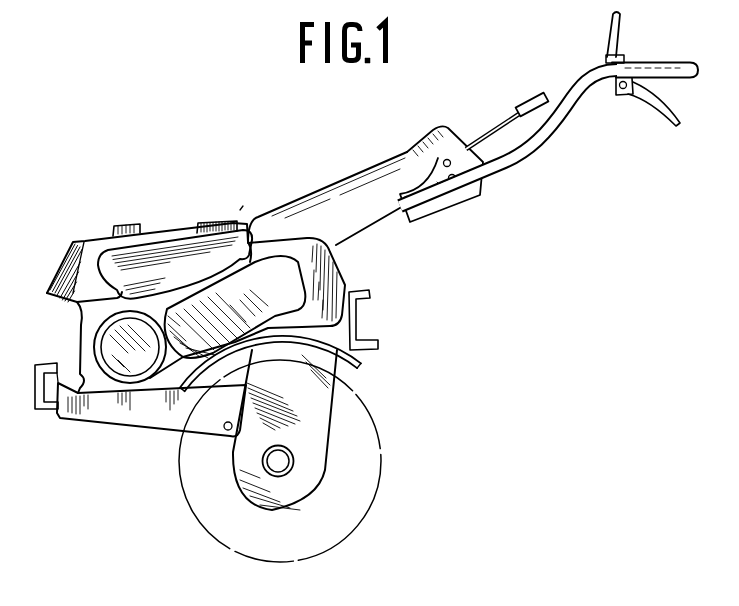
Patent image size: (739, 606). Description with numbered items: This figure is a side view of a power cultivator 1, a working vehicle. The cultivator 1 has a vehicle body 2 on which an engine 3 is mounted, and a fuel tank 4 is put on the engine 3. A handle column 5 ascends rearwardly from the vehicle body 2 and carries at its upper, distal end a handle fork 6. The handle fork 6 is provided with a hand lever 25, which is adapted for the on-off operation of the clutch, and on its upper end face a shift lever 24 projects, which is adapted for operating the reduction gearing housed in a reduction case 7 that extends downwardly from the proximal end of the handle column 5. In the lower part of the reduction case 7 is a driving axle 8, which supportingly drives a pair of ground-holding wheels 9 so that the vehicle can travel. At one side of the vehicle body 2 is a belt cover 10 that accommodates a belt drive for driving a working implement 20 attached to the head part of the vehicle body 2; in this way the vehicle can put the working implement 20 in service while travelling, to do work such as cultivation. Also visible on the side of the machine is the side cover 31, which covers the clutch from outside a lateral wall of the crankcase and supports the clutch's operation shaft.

The power cultivator 1 is at (243, 206).
The vehicle body 2 is at (144, 418).
The engine 3 is at (82, 332).
The fuel tank 4 is at (82, 252).
The handle column 5 is at (359, 176).
The handle fork 6 is at (498, 171).
The reduction case 7 is at (323, 408).
The driving axle 8 is at (291, 456).
The ground-holding wheels 9 is at (381, 462).
The belt cover 10 is at (200, 297).
The working implement 20 is at (343, 285).
The shift lever 24 is at (540, 97).
The hand lever 25 is at (621, 34).
The side cover 31 is at (110, 373).